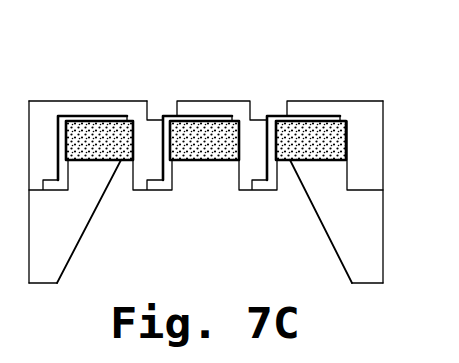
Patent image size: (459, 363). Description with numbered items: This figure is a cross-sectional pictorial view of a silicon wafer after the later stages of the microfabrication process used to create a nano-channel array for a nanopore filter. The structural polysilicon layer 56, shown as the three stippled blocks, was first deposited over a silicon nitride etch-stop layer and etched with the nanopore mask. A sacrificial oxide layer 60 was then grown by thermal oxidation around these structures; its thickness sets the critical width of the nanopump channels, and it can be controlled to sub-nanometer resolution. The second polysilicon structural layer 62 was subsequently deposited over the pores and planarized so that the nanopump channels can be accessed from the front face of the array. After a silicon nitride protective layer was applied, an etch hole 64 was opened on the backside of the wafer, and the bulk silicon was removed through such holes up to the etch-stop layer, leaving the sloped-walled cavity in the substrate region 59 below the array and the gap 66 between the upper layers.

The second polysilicon structural layer 62 is at (53, 102).
The opening/gap in cap layer 66 is at (169, 108).
The sacrificial oxide layer 60 is at (318, 117).
The structural polysilicon layer 56 is at (207, 161).
The etch hole 64 is at (96, 219).
The substrate 59 is at (66, 255).